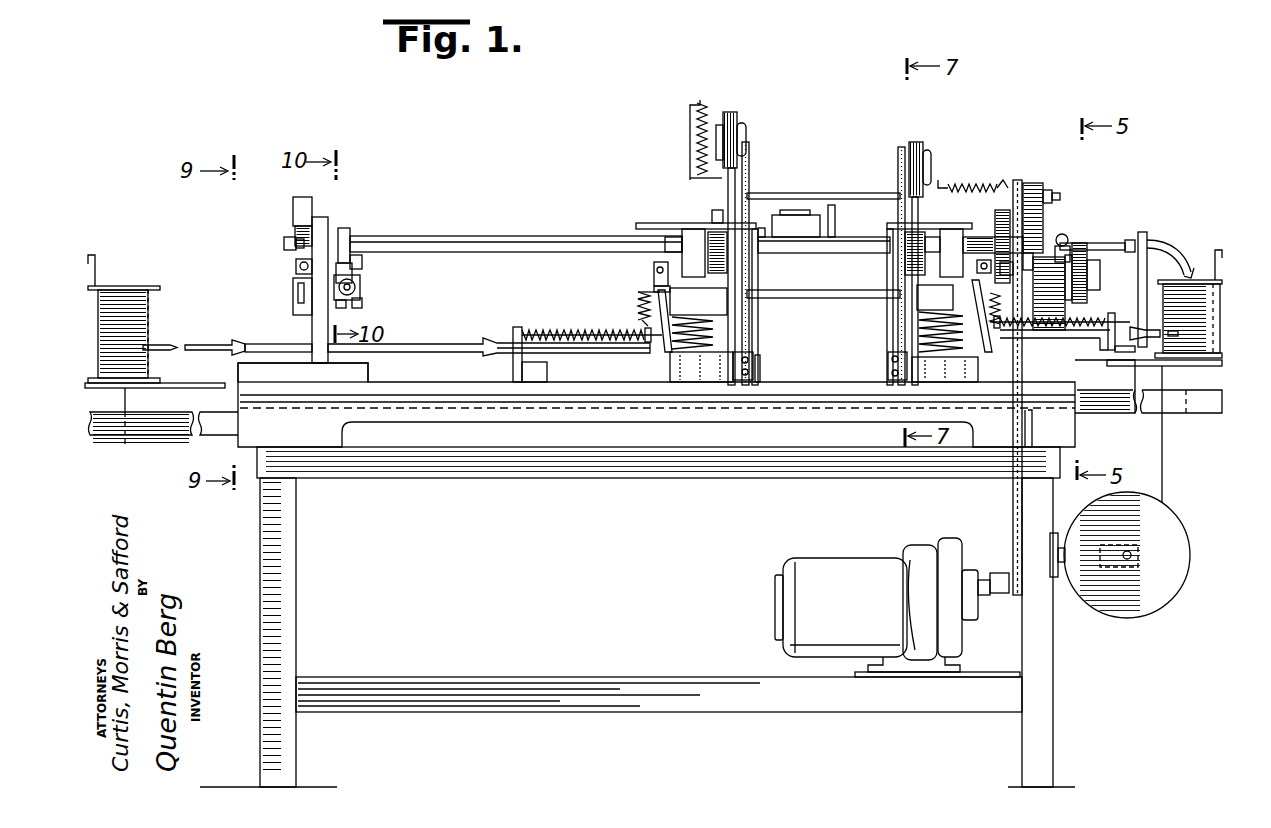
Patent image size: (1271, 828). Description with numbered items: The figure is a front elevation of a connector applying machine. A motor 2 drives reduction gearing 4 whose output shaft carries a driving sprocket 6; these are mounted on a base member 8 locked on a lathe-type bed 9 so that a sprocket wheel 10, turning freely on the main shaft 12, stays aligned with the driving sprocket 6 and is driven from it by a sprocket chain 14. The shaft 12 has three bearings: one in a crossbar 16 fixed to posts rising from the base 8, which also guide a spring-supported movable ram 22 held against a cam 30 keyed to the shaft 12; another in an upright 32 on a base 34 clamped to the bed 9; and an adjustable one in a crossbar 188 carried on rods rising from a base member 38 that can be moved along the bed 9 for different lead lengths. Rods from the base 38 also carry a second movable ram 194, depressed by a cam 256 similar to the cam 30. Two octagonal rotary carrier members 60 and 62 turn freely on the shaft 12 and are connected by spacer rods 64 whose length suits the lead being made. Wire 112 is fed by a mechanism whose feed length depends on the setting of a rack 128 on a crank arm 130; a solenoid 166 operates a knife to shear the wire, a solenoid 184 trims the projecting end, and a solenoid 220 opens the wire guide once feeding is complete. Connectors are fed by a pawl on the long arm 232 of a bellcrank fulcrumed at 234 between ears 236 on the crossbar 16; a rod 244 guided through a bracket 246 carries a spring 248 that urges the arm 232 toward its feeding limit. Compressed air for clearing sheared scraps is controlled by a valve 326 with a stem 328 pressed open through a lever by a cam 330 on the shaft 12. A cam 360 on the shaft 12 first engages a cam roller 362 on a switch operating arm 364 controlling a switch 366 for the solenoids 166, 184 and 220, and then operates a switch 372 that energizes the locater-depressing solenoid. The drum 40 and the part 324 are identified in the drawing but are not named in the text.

The motor 2 is at (835, 575).
The reduction gearing 4 is at (958, 562).
The driving sprocket 6 is at (1003, 595).
The base member 8 is at (945, 370).
The lathe-type bed 9 is at (420, 395).
The sprocket wheel 10 is at (1017, 180).
The main shaft 12 is at (500, 242).
The sprocket chain 14 is at (1013, 492).
The crossbar 16 is at (955, 245).
The movable crossbar or ram 22 is at (940, 318).
The cam 30 is at (914, 222).
The upright 32 is at (318, 224).
The base 34 is at (250, 372).
The base member 38 is at (690, 368).
The drum 40 is at (1036, 190).
The rotary member 60 is at (898, 172).
The rotary member 62 is at (749, 172).
The spacer rods 64 is at (858, 193).
The wire 112 is at (1111, 243).
The rack 128 is at (1087, 295).
The crank arm 130 is at (1060, 234).
The solenoid 166 is at (918, 150).
The solenoid 184 is at (731, 122).
The crossbar 188 is at (690, 238).
The movable crossbar or ram 194 is at (698, 318).
The solenoid 220 is at (786, 215).
The long arm of bellcrank lever 232 is at (648, 307).
The fulcrum 234 is at (654, 270).
The ears 236 is at (654, 286).
The rod 244 is at (497, 336).
The bracket 246 is at (515, 330).
The spring 248 is at (580, 330).
The cam 256 is at (712, 214).
The screw 324 is at (356, 263).
The valve 326 is at (358, 303).
The valve stem 328 is at (356, 288).
The cam 330 is at (346, 258).
The cam 360 is at (300, 231).
The cam roller 362 is at (287, 243).
The switch operating arm 364 is at (298, 267).
The switch 366 is at (300, 310).
The switch 372 is at (304, 206).